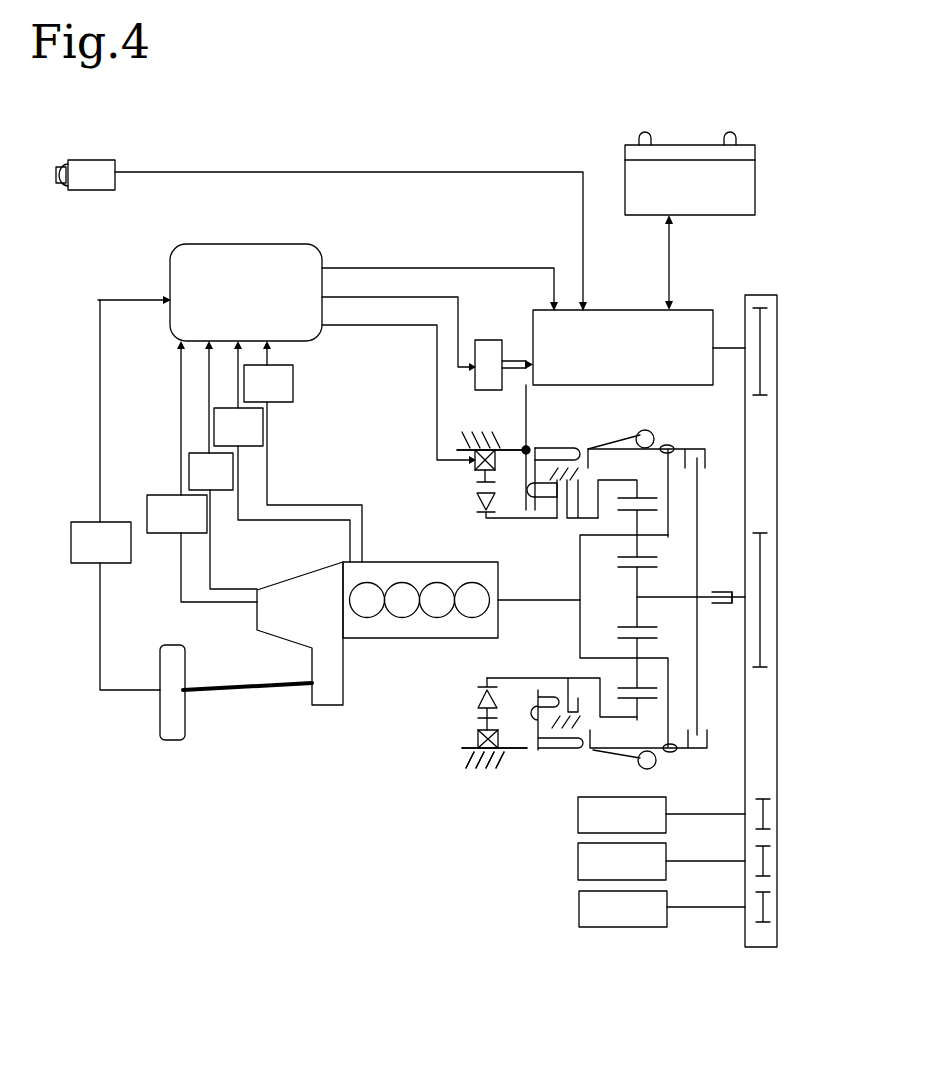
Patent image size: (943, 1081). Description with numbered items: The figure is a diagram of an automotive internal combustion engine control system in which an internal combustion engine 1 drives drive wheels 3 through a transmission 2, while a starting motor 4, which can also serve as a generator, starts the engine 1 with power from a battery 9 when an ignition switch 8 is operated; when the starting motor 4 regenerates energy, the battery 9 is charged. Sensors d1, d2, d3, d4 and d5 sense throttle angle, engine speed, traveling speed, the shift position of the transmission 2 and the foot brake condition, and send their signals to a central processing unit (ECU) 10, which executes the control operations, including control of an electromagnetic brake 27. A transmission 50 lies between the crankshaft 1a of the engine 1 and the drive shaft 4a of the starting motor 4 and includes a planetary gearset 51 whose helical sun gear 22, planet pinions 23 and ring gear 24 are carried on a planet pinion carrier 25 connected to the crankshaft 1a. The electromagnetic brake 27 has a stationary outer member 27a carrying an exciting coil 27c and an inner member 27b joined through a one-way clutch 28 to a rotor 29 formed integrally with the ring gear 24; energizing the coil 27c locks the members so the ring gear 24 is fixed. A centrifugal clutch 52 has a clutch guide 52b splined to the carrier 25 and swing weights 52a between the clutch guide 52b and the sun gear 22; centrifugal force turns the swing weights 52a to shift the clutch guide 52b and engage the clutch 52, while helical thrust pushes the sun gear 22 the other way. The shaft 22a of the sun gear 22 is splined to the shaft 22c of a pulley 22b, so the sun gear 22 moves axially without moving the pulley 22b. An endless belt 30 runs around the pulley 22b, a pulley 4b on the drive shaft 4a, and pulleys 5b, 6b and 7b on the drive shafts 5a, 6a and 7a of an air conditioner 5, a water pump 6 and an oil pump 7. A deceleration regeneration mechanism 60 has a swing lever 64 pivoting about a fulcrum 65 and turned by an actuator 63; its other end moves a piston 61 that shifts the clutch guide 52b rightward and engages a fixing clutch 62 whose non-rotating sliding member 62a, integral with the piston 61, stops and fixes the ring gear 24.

The internal combustion engine 1 is at (396, 641).
The crankshaft 1a is at (535, 599).
The transmission 2 is at (285, 578).
The drive wheels 3 is at (174, 746).
The starting motor 4 is at (626, 308).
The drive shaft of the starting motor 4a is at (727, 346).
The pulley 4b is at (775, 324).
The air conditioner 5 is at (578, 816).
The drive shaft of the air conditioner 5a is at (717, 813).
The pulley 5b is at (778, 822).
The water pump 6 is at (578, 861).
The drive shaft of the water pump 6a is at (698, 860).
The pulley 6b is at (778, 868).
The oil pump 7 is at (579, 908).
The drive shaft of the oil pump 7a is at (700, 913).
The pulley 7b is at (778, 912).
The ignition switch 8 is at (100, 160).
The battery 9 is at (757, 182).
The central processing unit (ECU) 10 is at (236, 244).
The sun gear 22 is at (641, 607).
The shaft of the sun gear 22a is at (704, 593).
The pulley 22b is at (778, 645).
The shaft of the pulley 22c is at (732, 605).
The planet pinions 23 is at (641, 548).
The ring gear 24 is at (656, 738).
The planet pinion carrier 25 is at (599, 657).
The electromagnetic brake 27 is at (470, 474).
The stationary outer member 27a is at (466, 744).
The inner member 27b is at (477, 716).
The exciting coil 27c is at (500, 740).
The one-way clutch 28 is at (477, 500).
The rotor 29 is at (547, 676).
The endless belt 30 is at (778, 485).
The transmission 50 is at (474, 792).
The planetary gearset 51 is at (671, 764).
The centrifugal clutch 52 is at (707, 445).
The swing weights 52a is at (654, 432).
The clutch guide 52b is at (648, 747).
The deceleration regeneration mechanism 60 is at (568, 439).
The piston 61 is at (546, 446).
The fixing clutch 62 is at (559, 513).
The sliding member 62a is at (585, 491).
The actuator 63 is at (486, 338).
The swing lever 64 is at (524, 410).
The fulcrum 65 is at (523, 455).
The throttle angle sensor d1 is at (286, 388).
The engine speed sensor d2 is at (258, 424).
The traveling speed sensor d3 is at (222, 466).
The shift position sensor d4 is at (157, 495).
The foot brake sensor d5 is at (72, 535).